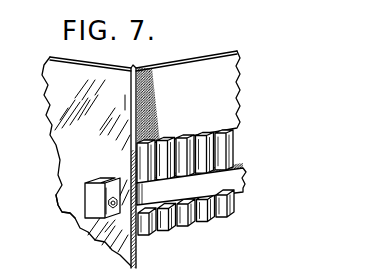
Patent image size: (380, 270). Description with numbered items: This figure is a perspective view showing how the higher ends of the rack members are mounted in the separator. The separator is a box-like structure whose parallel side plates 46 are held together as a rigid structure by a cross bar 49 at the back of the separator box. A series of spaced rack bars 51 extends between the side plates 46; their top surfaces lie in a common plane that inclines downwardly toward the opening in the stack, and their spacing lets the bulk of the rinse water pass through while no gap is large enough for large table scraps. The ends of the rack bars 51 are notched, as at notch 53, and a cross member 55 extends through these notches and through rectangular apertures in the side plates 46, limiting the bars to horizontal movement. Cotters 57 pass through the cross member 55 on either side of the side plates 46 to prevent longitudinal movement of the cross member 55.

The side plate 46 is at (55, 108).
The cross bar 49 is at (188, 98).
The rack bar 51 is at (231, 151).
The notch 53 is at (231, 198).
The cross member 55 is at (63, 212).
The cotter 57 is at (90, 206).